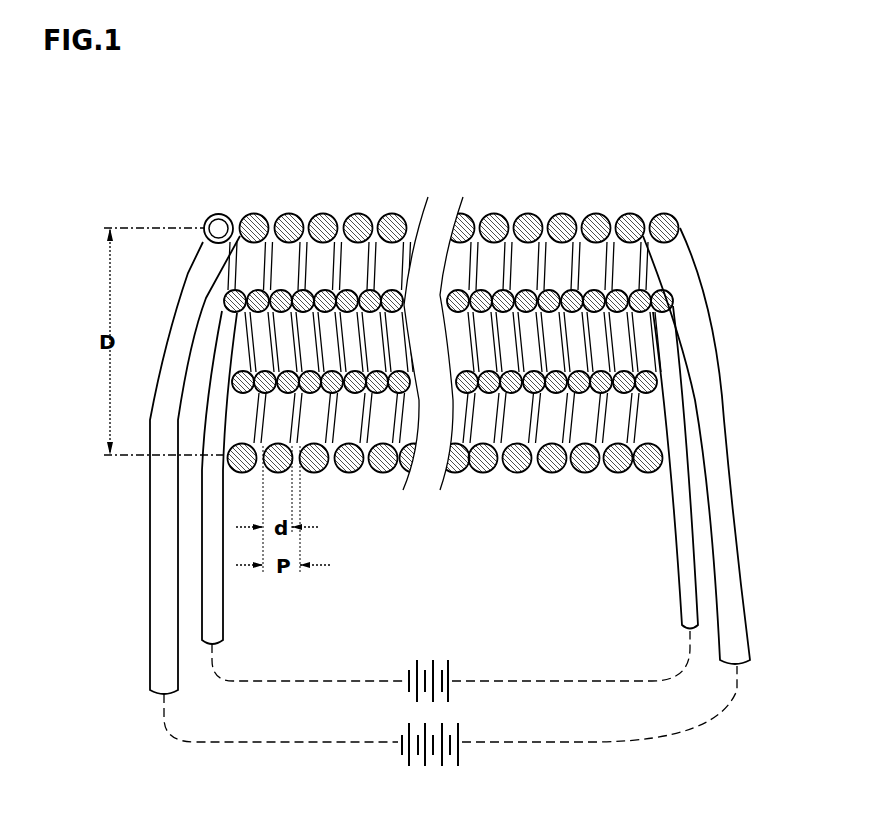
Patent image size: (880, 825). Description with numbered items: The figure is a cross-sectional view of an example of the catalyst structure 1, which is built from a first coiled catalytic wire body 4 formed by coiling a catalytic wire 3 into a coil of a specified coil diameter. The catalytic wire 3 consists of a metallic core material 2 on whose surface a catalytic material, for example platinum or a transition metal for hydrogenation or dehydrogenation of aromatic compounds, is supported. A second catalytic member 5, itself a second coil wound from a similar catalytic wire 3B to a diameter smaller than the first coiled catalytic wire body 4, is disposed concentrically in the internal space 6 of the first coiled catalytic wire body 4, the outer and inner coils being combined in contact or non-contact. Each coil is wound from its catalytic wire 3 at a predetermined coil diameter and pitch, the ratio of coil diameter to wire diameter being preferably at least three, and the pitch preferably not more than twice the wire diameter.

The catalyst structure 1 is at (583, 141).
The metallic core material 2 is at (210, 213).
The catalytic wire 3 is at (250, 143).
The catalytic wire of second coil 3B is at (672, 304).
The first coiled catalytic wire body 4 is at (657, 212).
The second catalytic member 5 is at (664, 296).
The internal space 6 is at (645, 410).